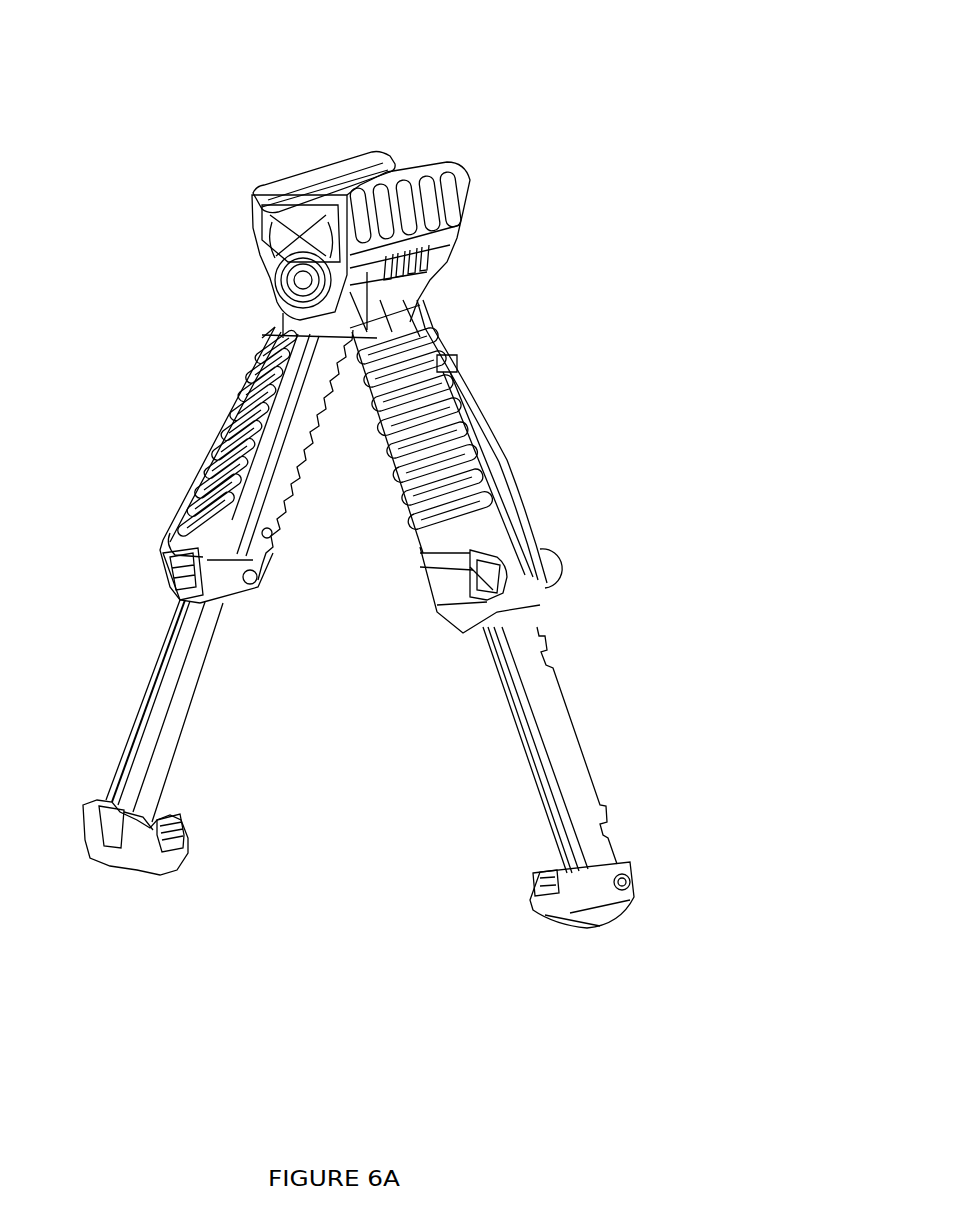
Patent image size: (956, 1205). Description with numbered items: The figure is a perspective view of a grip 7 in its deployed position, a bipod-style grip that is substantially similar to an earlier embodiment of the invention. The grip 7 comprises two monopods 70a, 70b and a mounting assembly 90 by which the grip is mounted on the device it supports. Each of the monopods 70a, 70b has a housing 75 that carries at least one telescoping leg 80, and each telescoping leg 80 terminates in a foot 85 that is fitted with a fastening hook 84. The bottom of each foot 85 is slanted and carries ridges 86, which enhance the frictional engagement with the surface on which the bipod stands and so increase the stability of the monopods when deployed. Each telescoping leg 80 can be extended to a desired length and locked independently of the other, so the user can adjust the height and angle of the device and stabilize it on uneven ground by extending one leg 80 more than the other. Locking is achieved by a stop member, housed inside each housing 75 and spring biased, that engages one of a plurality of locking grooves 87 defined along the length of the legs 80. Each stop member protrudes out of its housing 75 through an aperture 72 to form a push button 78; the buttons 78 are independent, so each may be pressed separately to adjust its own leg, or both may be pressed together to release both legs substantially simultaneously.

The grip 7 is at (452, 108).
The mounting assembly 90 is at (462, 232).
The monopod 70a is at (243, 465).
The monopod 70b is at (493, 466).
The housing 75 is at (300, 450).
The aperture 72 is at (430, 590).
The push button 78 is at (160, 553).
The telescoping leg 80 is at (408, 730).
The locking groove 87 is at (560, 670).
The fastening hook 84 is at (184, 835).
The foot 85 is at (386, 893).
The ridges 86 is at (570, 923).